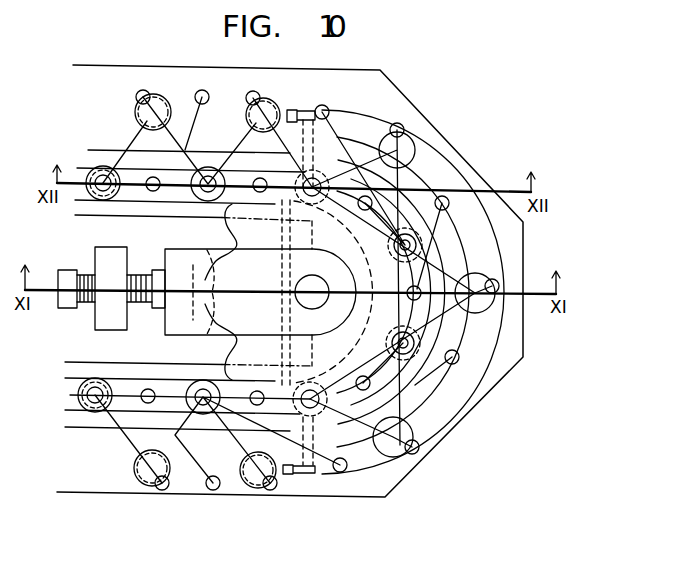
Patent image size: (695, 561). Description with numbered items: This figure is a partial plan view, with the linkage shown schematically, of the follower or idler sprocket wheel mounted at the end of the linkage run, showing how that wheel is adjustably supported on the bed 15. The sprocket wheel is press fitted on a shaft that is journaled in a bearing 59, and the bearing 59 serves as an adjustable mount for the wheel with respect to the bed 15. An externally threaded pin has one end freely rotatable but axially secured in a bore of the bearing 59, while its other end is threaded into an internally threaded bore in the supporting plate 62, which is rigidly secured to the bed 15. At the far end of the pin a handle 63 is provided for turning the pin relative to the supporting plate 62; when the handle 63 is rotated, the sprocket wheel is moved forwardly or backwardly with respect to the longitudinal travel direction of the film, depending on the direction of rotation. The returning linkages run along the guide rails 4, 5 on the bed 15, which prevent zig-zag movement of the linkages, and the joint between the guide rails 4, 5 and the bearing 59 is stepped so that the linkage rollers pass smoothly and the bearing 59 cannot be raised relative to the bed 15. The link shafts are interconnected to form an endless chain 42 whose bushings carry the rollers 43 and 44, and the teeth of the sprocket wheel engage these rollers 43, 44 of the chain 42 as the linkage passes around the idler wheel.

The guide rail 4 is at (135, 212).
The guide rail 5 is at (100, 150).
The bed 15 is at (457, 425).
The endless chain 42 is at (168, 388).
The roller 43 is at (99, 203).
The roller 44 is at (160, 192).
The bearing 59 is at (476, 236).
The supporting plate 62 is at (106, 322).
The handle 63 is at (70, 303).